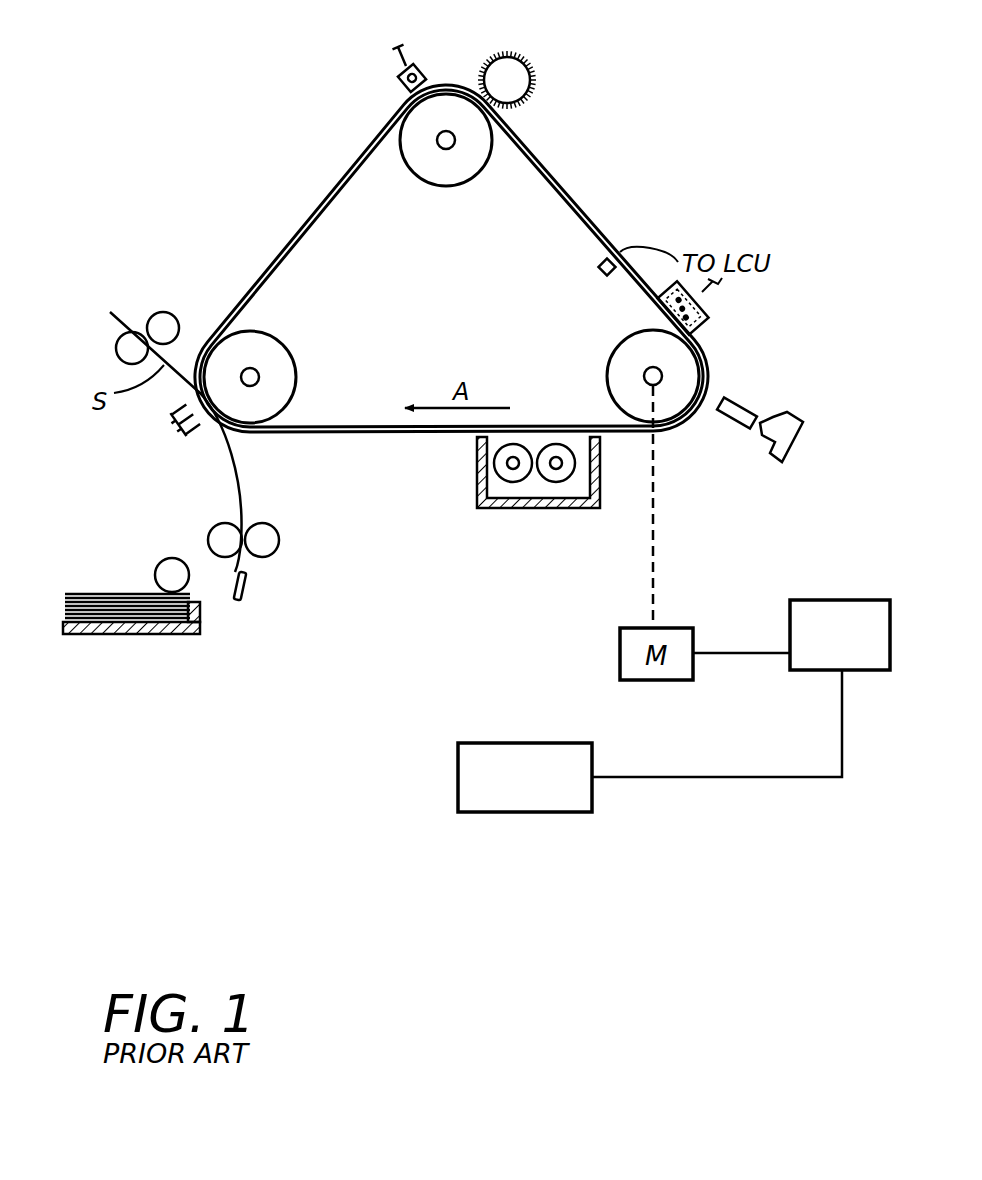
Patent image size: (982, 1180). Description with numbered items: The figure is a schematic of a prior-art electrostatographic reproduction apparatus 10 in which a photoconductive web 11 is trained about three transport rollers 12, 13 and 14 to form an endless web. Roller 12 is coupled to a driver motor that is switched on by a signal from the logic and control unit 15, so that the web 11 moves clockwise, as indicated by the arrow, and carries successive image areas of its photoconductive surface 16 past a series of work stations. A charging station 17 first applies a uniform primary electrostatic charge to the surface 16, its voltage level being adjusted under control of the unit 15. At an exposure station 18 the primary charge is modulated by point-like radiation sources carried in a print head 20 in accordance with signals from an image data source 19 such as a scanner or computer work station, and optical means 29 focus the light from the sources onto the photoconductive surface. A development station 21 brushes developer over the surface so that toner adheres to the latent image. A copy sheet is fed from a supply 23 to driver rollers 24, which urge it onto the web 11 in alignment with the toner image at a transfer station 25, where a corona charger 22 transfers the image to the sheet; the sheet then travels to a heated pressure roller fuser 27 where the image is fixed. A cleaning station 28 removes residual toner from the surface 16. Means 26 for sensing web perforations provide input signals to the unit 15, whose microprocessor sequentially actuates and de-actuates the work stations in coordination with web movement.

The electrostatographic reproduction apparatus 10 is at (288, 184).
The photoconductive web 11 is at (282, 256).
The transport roller 12 is at (611, 352).
The transport roller 13 is at (458, 186).
The transport roller 14 is at (293, 353).
The logic and control unit 15 is at (790, 615).
The photoconductive surface 16 is at (600, 230).
The charging station 17 is at (712, 332).
The exposure station 18 is at (754, 400).
The image data source 19 is at (470, 743).
The print head 20 is at (771, 454).
The development station 21 is at (508, 530).
The corona charger 22 is at (162, 429).
The supply 23 is at (150, 634).
The driver rollers 24 is at (208, 533).
The transfer station 25 is at (173, 463).
The means for sensing web perforations 26 is at (598, 268).
The heated pressure roller fuser 27 is at (117, 329).
The cleaning station 28 is at (528, 56).
The optical means 29 is at (726, 423).